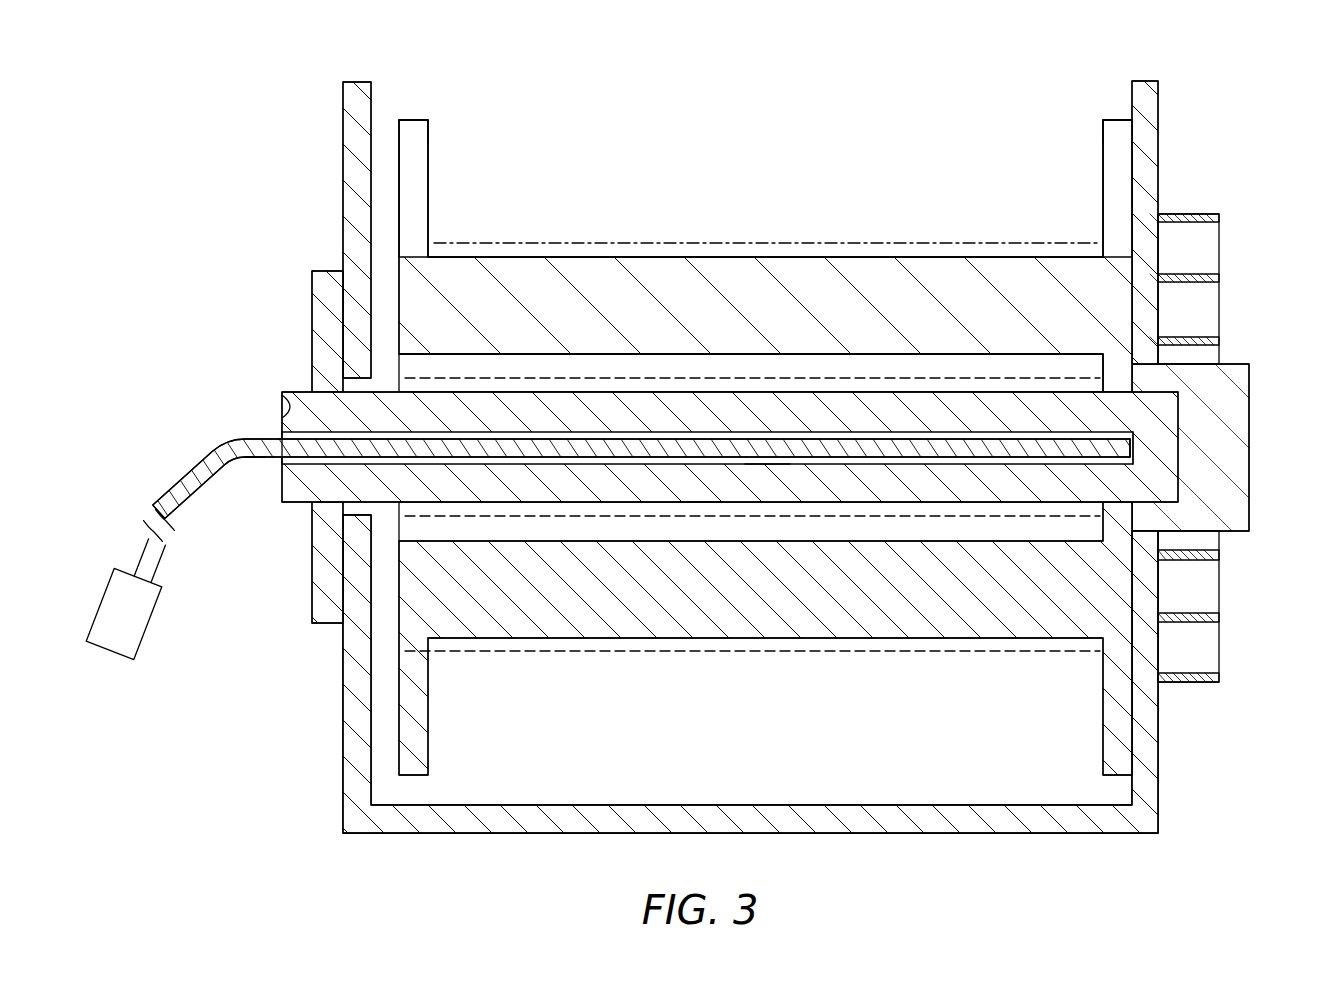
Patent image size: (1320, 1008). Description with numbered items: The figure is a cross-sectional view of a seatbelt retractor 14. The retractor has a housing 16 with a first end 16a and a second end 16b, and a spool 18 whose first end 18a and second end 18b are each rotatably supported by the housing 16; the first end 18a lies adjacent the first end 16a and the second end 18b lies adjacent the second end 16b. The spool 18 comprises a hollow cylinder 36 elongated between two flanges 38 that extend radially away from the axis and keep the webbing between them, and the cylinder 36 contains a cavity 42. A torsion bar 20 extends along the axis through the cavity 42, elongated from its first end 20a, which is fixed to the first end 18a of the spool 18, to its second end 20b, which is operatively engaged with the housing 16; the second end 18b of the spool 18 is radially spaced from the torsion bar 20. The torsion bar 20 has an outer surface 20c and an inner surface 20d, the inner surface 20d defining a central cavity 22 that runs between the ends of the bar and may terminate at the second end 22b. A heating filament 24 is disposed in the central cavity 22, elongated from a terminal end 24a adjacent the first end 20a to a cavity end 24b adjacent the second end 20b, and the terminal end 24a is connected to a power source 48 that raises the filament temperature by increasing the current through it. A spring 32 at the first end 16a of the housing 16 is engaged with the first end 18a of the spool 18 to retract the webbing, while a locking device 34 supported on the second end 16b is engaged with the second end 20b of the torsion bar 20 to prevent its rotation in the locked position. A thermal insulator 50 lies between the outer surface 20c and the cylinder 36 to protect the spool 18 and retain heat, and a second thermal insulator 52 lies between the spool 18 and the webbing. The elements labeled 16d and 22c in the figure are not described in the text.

The seatbelt retractor 14 is at (1053, 58).
The housing 16 is at (1060, 833).
The first end of the housing 16a is at (1158, 105).
The second end of the housing 16b is at (343, 108).
The housing inner wall 16d is at (428, 717).
The spool 18 is at (776, 254).
The first end of the spool 18a is at (1098, 175).
The second end of the spool 18b is at (441, 213).
The torsion bar 20 is at (806, 389).
The first end of the torsion bar 20a is at (1166, 412).
The second end of the torsion bar 20b is at (285, 405).
The outer surface of the torsion bar 20c is at (697, 505).
The inner surface of the torsion bar 20d is at (752, 463).
The central cavity 22 is at (606, 432).
The second end of the central cavity 22b is at (279, 437).
The bore outlet end 22c is at (1136, 463).
The heating filament 24 is at (832, 458).
The terminal end 24a is at (270, 468).
The cavity end 24b is at (1125, 452).
The spring 32 is at (1200, 214).
The locking device 34 is at (312, 295).
The cylinder 36 is at (590, 257).
The flange 38 is at (428, 143).
The cavity 42 is at (1025, 370).
The power source 48 is at (147, 636).
The thermal insulator 50 is at (869, 377).
The second thermal insulator 52 is at (714, 243).